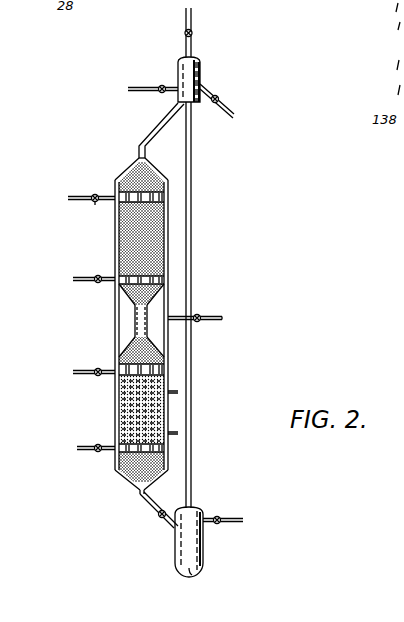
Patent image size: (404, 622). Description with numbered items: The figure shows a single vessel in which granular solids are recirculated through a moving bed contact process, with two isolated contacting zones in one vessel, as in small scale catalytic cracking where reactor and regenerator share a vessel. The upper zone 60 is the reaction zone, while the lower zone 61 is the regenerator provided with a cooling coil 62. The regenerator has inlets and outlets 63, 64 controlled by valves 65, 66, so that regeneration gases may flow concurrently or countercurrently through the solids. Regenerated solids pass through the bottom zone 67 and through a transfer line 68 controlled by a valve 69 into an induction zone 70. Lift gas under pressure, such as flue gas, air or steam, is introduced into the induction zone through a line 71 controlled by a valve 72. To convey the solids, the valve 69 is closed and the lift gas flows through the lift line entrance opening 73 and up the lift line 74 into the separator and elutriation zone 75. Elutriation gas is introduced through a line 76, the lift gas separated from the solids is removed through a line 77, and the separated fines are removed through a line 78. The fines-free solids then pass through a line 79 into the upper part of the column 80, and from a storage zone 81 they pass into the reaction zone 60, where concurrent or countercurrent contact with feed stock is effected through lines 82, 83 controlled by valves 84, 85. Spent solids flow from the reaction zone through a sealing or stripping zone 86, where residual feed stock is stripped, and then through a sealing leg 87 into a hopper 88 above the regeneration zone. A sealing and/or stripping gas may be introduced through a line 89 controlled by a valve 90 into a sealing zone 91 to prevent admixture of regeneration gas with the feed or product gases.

The upper zone 60 is at (138, 234).
The zone 61 is at (126, 421).
The cooling coil 62 is at (130, 412).
The inlet and outlet 63 is at (73, 373).
The inlet and outlet 64 is at (84, 451).
The valve 65 is at (99, 377).
The valve 66 is at (108, 458).
The bottom zone 67 is at (123, 487).
The transfer line 68 is at (138, 504).
The valve 69 is at (159, 520).
The induction zone 70 is at (204, 550).
The line 71 is at (217, 516).
The valve 72 is at (228, 518).
The lift line entrance opening 73 is at (204, 566).
The lift line 74 is at (191, 412).
The separator and elutriation zone 75 is at (201, 61).
The line 76 is at (152, 86).
The line 77 is at (193, 26).
The line 78 is at (207, 89).
The line 79 is at (138, 146).
The column 80 is at (114, 183).
The storage zone 81 is at (152, 174).
The line 82 is at (68, 199).
The line 83 is at (73, 279).
The valve 84 is at (96, 205).
The valve 85 is at (92, 285).
The sealing or stripping zone 86 is at (121, 298).
The sealing leg 87 is at (141, 318).
The hopper 88 is at (158, 359).
The line 89 is at (218, 322).
The valve 90 is at (204, 316).
The sealing zone 91 is at (123, 330).